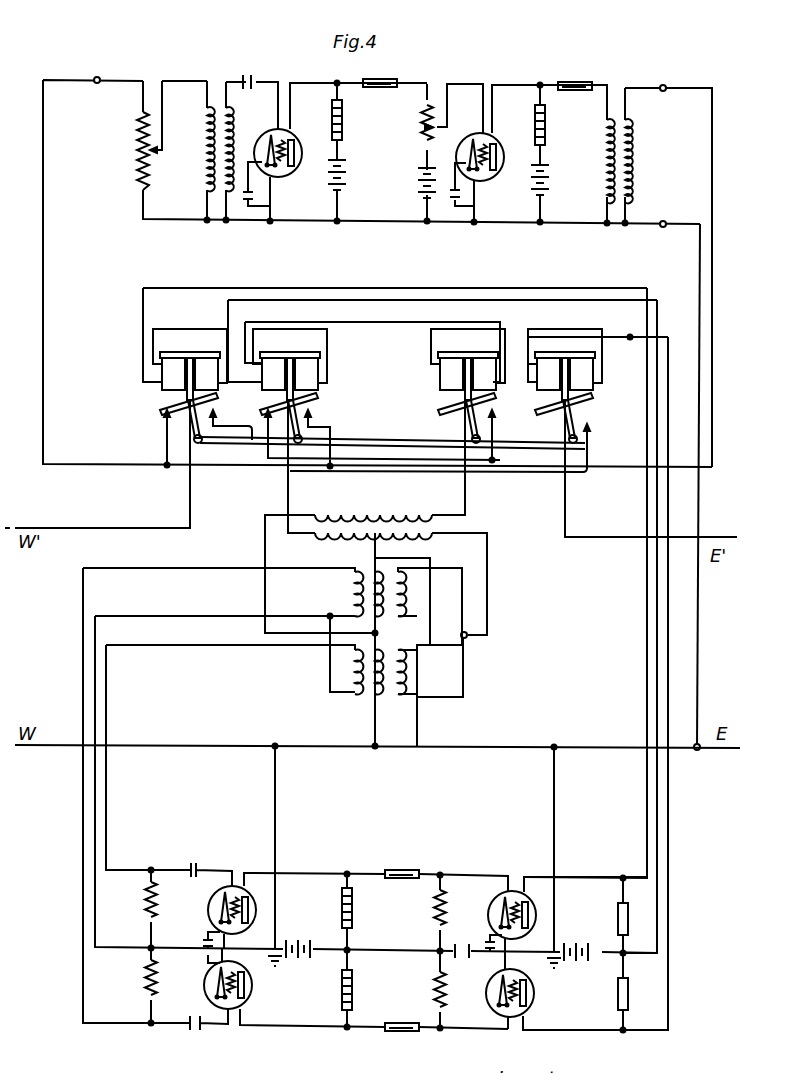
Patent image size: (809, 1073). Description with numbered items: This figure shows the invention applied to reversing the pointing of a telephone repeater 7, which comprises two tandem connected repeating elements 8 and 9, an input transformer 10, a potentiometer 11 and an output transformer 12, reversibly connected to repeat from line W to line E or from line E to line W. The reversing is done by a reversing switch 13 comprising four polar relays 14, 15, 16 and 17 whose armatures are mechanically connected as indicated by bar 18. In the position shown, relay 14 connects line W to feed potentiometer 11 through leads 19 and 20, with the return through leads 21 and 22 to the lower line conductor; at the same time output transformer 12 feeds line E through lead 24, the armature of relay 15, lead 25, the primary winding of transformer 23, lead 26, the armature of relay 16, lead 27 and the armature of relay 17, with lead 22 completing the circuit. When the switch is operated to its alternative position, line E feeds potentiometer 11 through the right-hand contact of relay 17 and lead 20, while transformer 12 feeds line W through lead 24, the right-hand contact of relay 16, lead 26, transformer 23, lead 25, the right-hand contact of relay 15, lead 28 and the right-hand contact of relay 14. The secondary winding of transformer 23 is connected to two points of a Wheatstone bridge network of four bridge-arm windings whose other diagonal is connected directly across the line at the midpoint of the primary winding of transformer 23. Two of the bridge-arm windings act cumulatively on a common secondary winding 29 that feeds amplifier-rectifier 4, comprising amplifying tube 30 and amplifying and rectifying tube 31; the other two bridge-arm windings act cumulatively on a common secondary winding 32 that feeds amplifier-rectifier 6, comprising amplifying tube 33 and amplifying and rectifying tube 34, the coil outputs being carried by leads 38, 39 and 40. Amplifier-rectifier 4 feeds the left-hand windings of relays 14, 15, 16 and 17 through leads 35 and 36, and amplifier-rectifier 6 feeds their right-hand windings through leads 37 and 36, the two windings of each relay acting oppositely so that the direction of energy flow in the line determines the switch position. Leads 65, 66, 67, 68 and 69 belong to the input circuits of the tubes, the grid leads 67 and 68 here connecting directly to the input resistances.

The amplifier-rectifier 4 is at (366, 922).
The amplifier-rectifier 6 is at (362, 1000).
The repeater 7 is at (405, 151).
The repeating element 8 is at (265, 135).
The repeating element 9 is at (473, 138).
The input transformer 10 is at (212, 106).
The potentiometer 11 is at (140, 142).
The output transformer 12 is at (610, 108).
The reversing switch 13 is at (393, 360).
The relay 14 is at (165, 406).
The relay 15 is at (265, 406).
The relay 16 is at (440, 406).
The relay 17 is at (540, 406).
The bar 18 is at (372, 433).
The lead 19 is at (166, 440).
The lead 20 is at (43, 332).
The lead 21 is at (380, 220).
The lead 22 is at (700, 505).
The transformer 23 is at (316, 530).
The lead 24 is at (712, 300).
The lead 25 is at (286, 490).
The lead 26 is at (464, 490).
The lead 27 is at (530, 472).
The lead 28 is at (250, 448).
The secondary winding 29 is at (345, 664).
The amplifying tube 30 is at (222, 896).
The amplifying and rectifying tube 31 is at (495, 908).
The secondary winding 32 is at (345, 592).
The amplifying tube 33 is at (218, 996).
The amplifying and rectifying tube 34 is at (494, 996).
The lead 35 is at (647, 578).
The lead 36 is at (657, 600).
The lead 37 is at (668, 622).
The lead 38 is at (106, 828).
The lead 39 is at (95, 800).
The lead 40 is at (83, 772).
The lead 65 is at (428, 874).
The lead 66 is at (416, 1030).
The lead 67 is at (466, 875).
The lead 68 is at (466, 1031).
The lead 69 is at (466, 940).